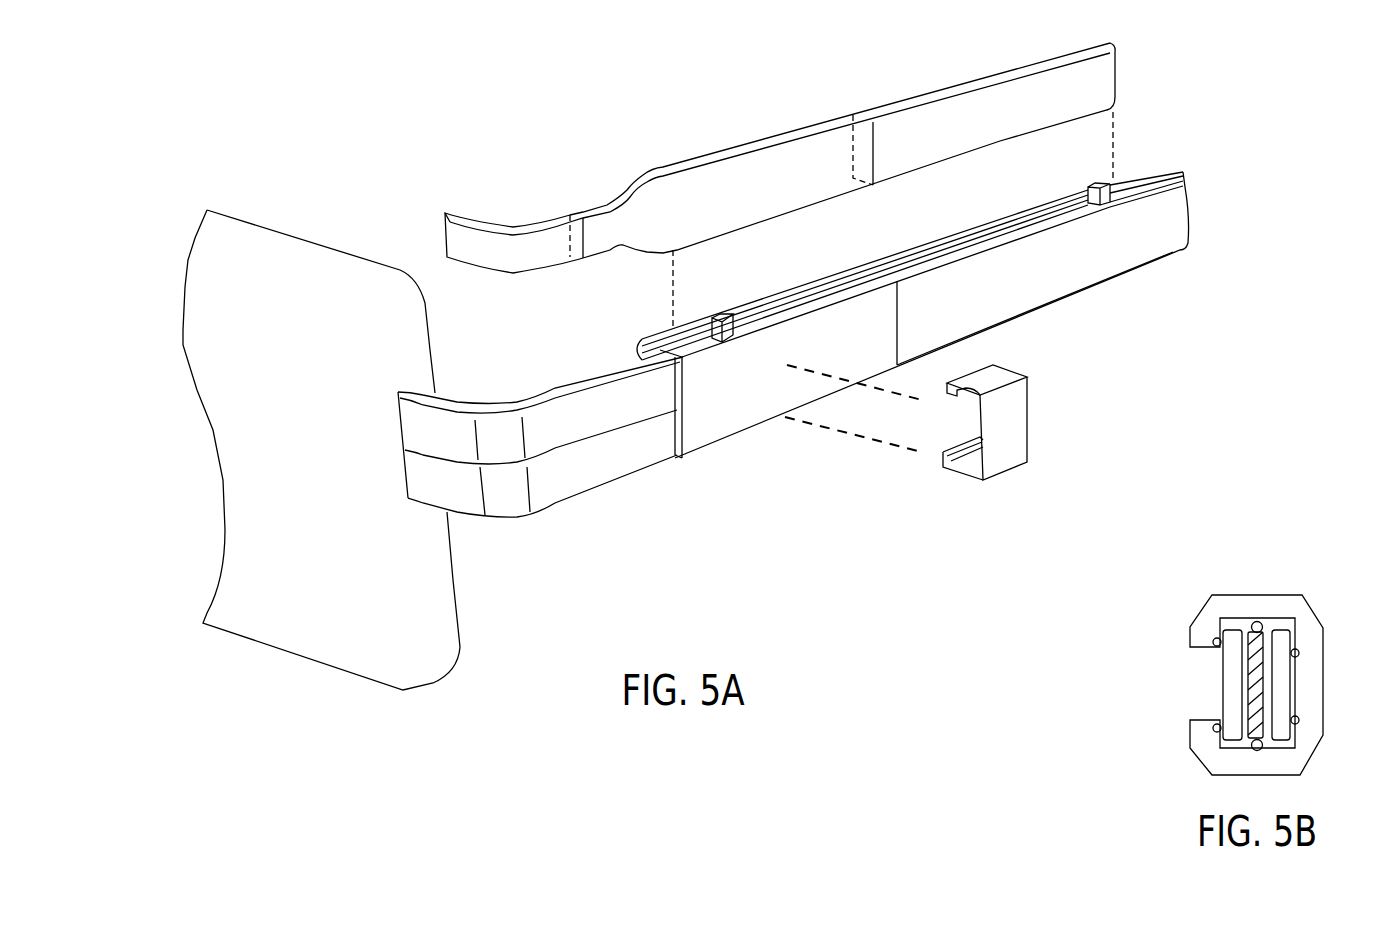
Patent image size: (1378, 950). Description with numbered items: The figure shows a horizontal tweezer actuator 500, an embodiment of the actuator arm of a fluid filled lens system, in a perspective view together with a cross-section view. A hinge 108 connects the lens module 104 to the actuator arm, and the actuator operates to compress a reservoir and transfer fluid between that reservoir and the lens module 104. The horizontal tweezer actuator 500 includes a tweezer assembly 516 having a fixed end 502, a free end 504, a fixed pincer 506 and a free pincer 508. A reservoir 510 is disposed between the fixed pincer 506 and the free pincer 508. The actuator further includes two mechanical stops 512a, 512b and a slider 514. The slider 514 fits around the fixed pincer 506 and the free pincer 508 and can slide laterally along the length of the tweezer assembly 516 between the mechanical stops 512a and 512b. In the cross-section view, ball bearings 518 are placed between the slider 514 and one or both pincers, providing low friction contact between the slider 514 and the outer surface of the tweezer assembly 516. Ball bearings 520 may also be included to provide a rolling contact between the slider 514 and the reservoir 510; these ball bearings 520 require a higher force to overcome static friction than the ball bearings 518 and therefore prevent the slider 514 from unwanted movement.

In FIG. 5A, the horizontal tweezer actuator 500 is at (287, 138).
In FIG. 5A, the lens module 104 is at (281, 635).
In FIG. 5A, the hinge 108 is at (548, 492).
In FIG. 5A, the reservoir 510 is at (767, 167).
In FIG. 5B, the reservoir 510 is at (1245, 652).
In FIG. 5A, the fixed end 502 is at (1125, 185).
In FIG. 5A, the free end 504 is at (637, 353).
In FIG. 5A, the fixed pincer 506 is at (1033, 218).
In FIG. 5B, the fixed pincer 506 is at (1280, 685).
In FIG. 5A, the free pincer 508 is at (973, 233).
In FIG. 5B, the free pincer 508 is at (1218, 690).
In FIG. 5A, the mechanical stop 512a is at (1100, 182).
In FIG. 5A, the mechanical stop 512b is at (723, 312).
In FIG. 5A, the slider 514 is at (1000, 372).
In FIG. 5B, the slider 514 is at (1297, 605).
In FIG. 5A, the tweezer assembly 516 is at (1098, 270).
In FIG. 5B, the ball bearings 518 is at (1215, 642).
In FIG. 5B, the ball bearings 520 is at (1255, 622).